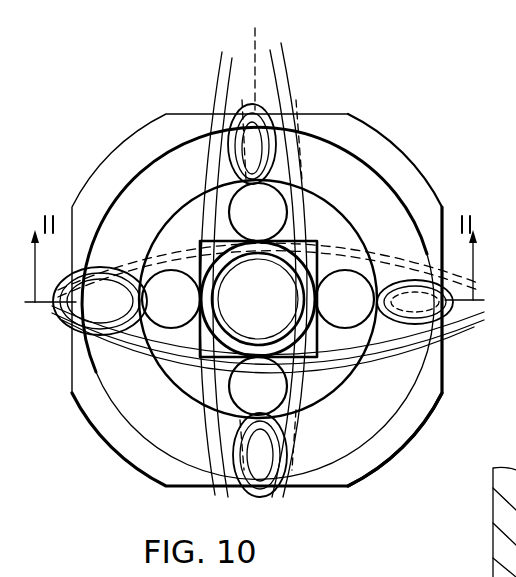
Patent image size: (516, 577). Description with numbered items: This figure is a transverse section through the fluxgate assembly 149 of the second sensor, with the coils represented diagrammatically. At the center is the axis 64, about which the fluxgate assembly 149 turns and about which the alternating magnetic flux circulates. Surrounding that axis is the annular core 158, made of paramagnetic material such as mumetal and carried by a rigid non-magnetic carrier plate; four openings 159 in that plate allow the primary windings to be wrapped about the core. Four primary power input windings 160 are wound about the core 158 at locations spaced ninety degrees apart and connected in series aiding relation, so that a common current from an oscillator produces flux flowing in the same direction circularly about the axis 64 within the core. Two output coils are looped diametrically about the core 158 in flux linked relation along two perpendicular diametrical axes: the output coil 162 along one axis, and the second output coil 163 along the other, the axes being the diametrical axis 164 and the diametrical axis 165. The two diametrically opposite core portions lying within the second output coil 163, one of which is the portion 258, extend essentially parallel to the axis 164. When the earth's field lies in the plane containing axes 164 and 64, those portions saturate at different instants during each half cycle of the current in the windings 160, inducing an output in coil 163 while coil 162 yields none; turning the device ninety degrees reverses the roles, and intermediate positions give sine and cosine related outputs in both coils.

The fluxgate assembly 149 is at (132, 120).
The annular core 158 is at (358, 166).
The openings 159 is at (348, 372).
The primary power input windings 160 is at (233, 163).
The output coil 162 is at (210, 98).
The second output coil 163 is at (117, 250).
The diametrical axis 164 is at (254, 57).
The diametrical axis 165 is at (50, 304).
The portion of core 258 is at (392, 447).
The axis 64 is at (268, 285).